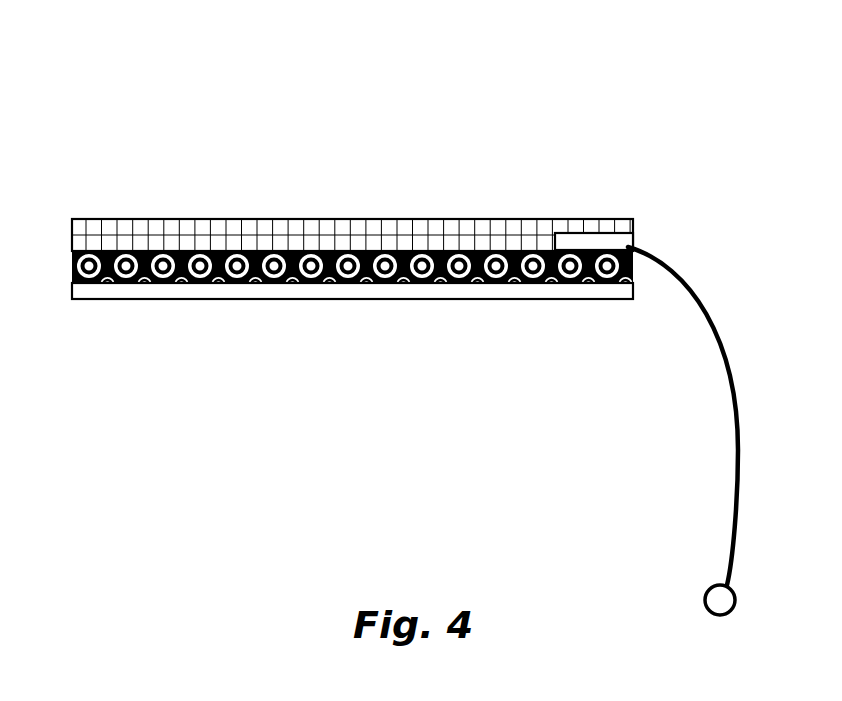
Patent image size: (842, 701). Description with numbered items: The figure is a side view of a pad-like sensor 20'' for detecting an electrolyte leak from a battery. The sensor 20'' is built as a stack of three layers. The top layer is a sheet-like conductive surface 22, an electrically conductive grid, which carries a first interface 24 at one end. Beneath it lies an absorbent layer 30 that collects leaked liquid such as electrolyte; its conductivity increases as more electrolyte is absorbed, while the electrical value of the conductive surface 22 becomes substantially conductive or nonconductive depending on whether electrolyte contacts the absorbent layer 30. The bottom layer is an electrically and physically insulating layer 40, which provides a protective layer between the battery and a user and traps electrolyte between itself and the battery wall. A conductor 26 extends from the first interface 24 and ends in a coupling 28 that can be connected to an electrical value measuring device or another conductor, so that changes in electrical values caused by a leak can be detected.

The sensor 20'' is at (352, 161).
The conductive surface 22 is at (298, 220).
The first interface 24 is at (633, 218).
The conductor 26 is at (713, 327).
The coupling 28 is at (718, 602).
The absorbent layer 30 is at (72, 270).
The insulating layer 40 is at (162, 300).